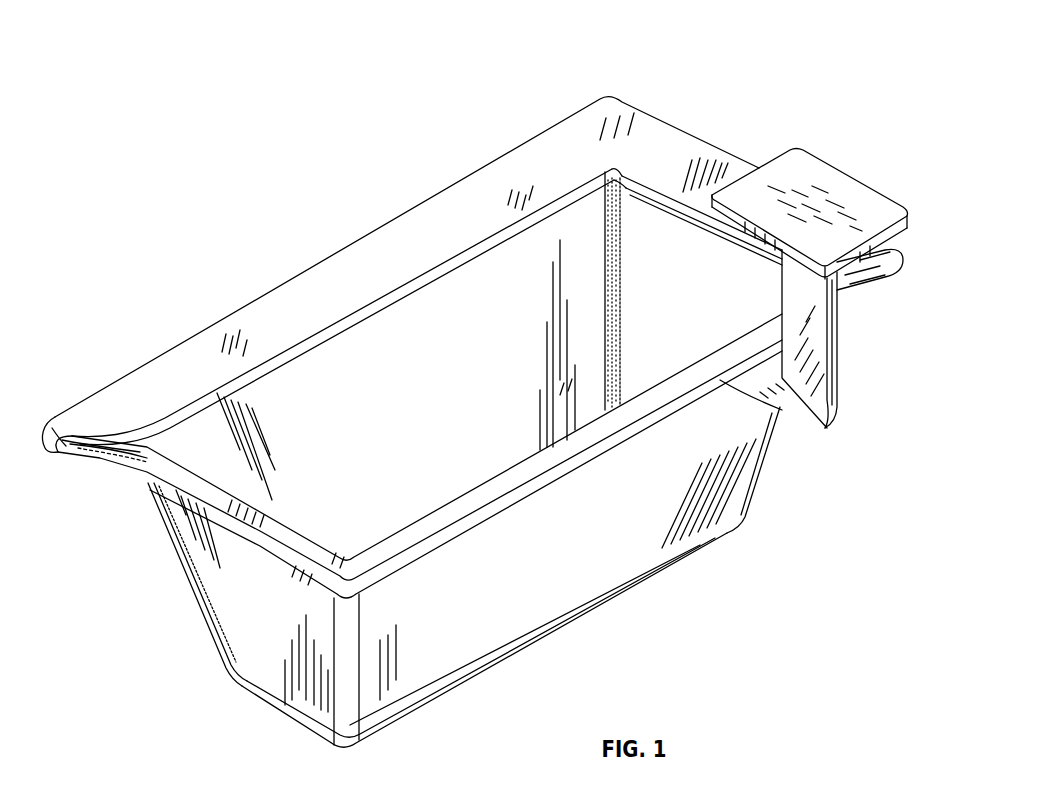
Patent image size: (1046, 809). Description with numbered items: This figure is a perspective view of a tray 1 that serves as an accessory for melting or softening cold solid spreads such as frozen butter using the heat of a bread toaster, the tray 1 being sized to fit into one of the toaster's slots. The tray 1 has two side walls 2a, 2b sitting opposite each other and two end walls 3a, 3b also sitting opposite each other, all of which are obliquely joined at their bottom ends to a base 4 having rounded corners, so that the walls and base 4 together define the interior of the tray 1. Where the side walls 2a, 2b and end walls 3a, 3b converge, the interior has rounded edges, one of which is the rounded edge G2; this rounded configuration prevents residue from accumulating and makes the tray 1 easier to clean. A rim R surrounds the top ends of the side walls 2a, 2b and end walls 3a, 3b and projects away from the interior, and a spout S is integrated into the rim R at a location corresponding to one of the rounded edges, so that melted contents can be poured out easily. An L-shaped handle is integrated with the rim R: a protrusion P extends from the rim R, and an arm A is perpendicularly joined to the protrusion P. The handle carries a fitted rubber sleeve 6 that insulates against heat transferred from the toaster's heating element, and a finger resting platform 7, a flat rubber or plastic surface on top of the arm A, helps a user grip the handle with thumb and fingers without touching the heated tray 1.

The tray 1 is at (360, 190).
The rim R is at (485, 192).
The spout S is at (68, 430).
The rounded edge G2 is at (611, 245).
The side wall 2a is at (396, 370).
The side wall 2b is at (580, 553).
The end wall 3a is at (253, 614).
The end wall 3b is at (645, 214).
The base 4 is at (640, 577).
The fitted rubber sleeve 6 is at (812, 302).
The finger resting platform 7 is at (850, 193).
The arm A is at (838, 377).
The protrusion P is at (777, 400).